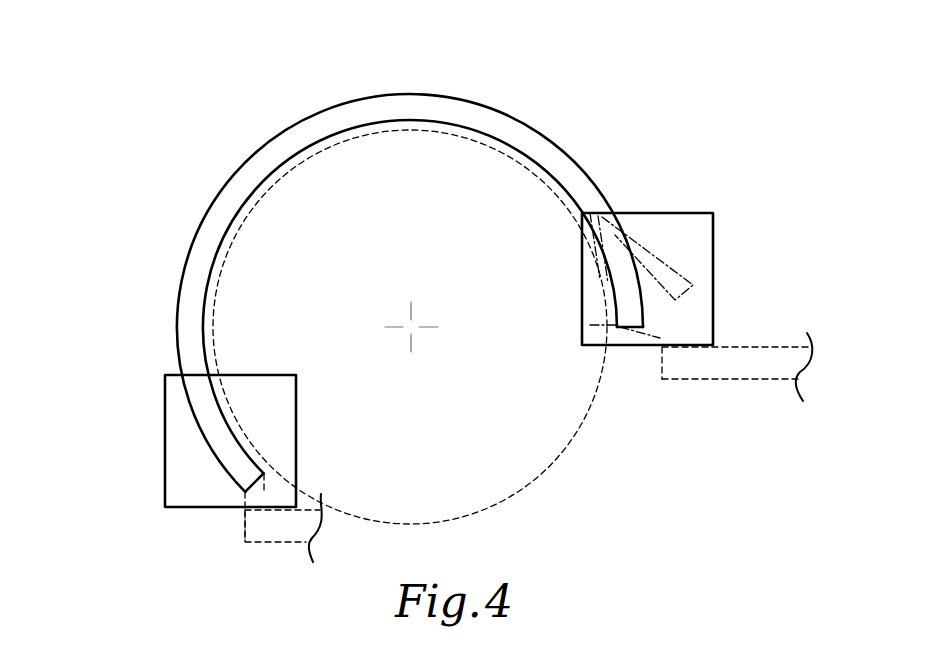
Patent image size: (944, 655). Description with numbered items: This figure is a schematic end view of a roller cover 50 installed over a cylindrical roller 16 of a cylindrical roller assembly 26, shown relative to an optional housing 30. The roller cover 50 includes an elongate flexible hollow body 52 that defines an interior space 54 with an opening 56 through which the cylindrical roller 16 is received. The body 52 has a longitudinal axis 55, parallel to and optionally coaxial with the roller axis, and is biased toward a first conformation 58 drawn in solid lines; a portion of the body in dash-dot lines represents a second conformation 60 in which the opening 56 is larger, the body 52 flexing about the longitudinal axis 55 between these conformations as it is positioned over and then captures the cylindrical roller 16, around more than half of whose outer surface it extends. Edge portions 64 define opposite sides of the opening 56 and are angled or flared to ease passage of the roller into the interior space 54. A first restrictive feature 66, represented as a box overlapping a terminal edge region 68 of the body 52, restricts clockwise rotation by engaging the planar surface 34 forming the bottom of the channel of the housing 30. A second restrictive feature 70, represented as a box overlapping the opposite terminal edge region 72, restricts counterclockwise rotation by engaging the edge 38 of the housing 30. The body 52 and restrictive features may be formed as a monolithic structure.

The cylindrical roller 16 is at (546, 474).
The cylindrical roller assembly 26 is at (790, 282).
The housing 30 is at (723, 388).
The planar surface 34 is at (752, 347).
The edge 38 is at (245, 530).
The roller cover 50 is at (131, 101).
The elongate flexible hollow body 52 is at (430, 90).
The interior space 54 is at (263, 252).
The longitudinal axis 55 is at (413, 328).
The opening 56 is at (608, 404).
The first conformation 58 is at (203, 96).
The second conformation 60 is at (259, 84).
The edge portions 64 is at (262, 492).
The first restrictive feature 66 is at (672, 213).
The terminal edge region 68 is at (646, 300).
The second restrictive feature 70 is at (165, 428).
The terminal edge region 72 is at (210, 447).